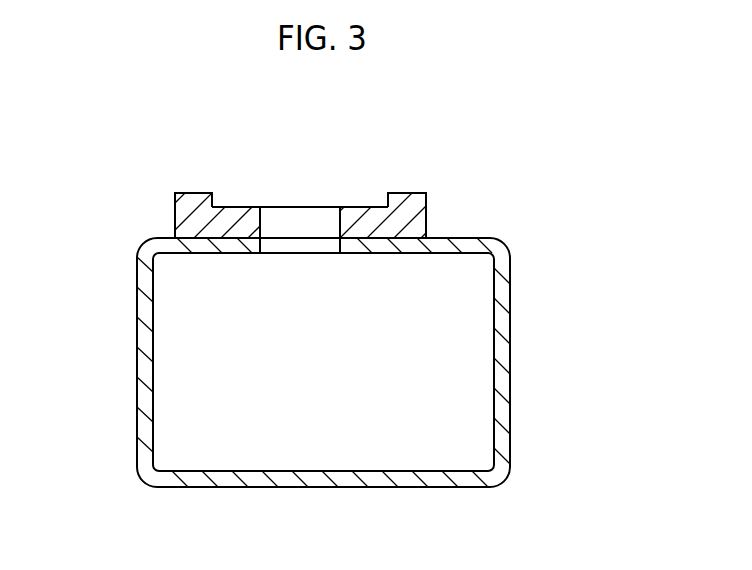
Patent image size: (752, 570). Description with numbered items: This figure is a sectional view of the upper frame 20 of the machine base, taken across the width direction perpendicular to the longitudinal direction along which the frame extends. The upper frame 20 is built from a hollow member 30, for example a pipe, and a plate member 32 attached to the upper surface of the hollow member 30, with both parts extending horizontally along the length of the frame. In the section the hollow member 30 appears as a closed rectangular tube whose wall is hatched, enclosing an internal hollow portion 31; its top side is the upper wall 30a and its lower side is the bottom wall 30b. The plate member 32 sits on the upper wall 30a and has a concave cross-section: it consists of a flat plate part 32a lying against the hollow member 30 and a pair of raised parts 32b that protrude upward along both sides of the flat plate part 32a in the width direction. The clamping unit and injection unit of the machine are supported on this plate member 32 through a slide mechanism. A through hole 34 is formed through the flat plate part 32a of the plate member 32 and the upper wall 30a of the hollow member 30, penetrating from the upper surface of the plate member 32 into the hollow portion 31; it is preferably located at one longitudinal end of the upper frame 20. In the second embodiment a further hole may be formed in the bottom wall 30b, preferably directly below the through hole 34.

The upper frame 20 is at (81, 130).
The hollow member 30 is at (523, 309).
The upper wall 30a is at (472, 239).
The bottom wall 30b is at (470, 488).
The hollow portion 31 is at (306, 446).
The plate member 32 is at (212, 130).
The flat plate part 32a is at (363, 206).
The raised parts 32b is at (203, 192).
The through hole 34 is at (263, 224).